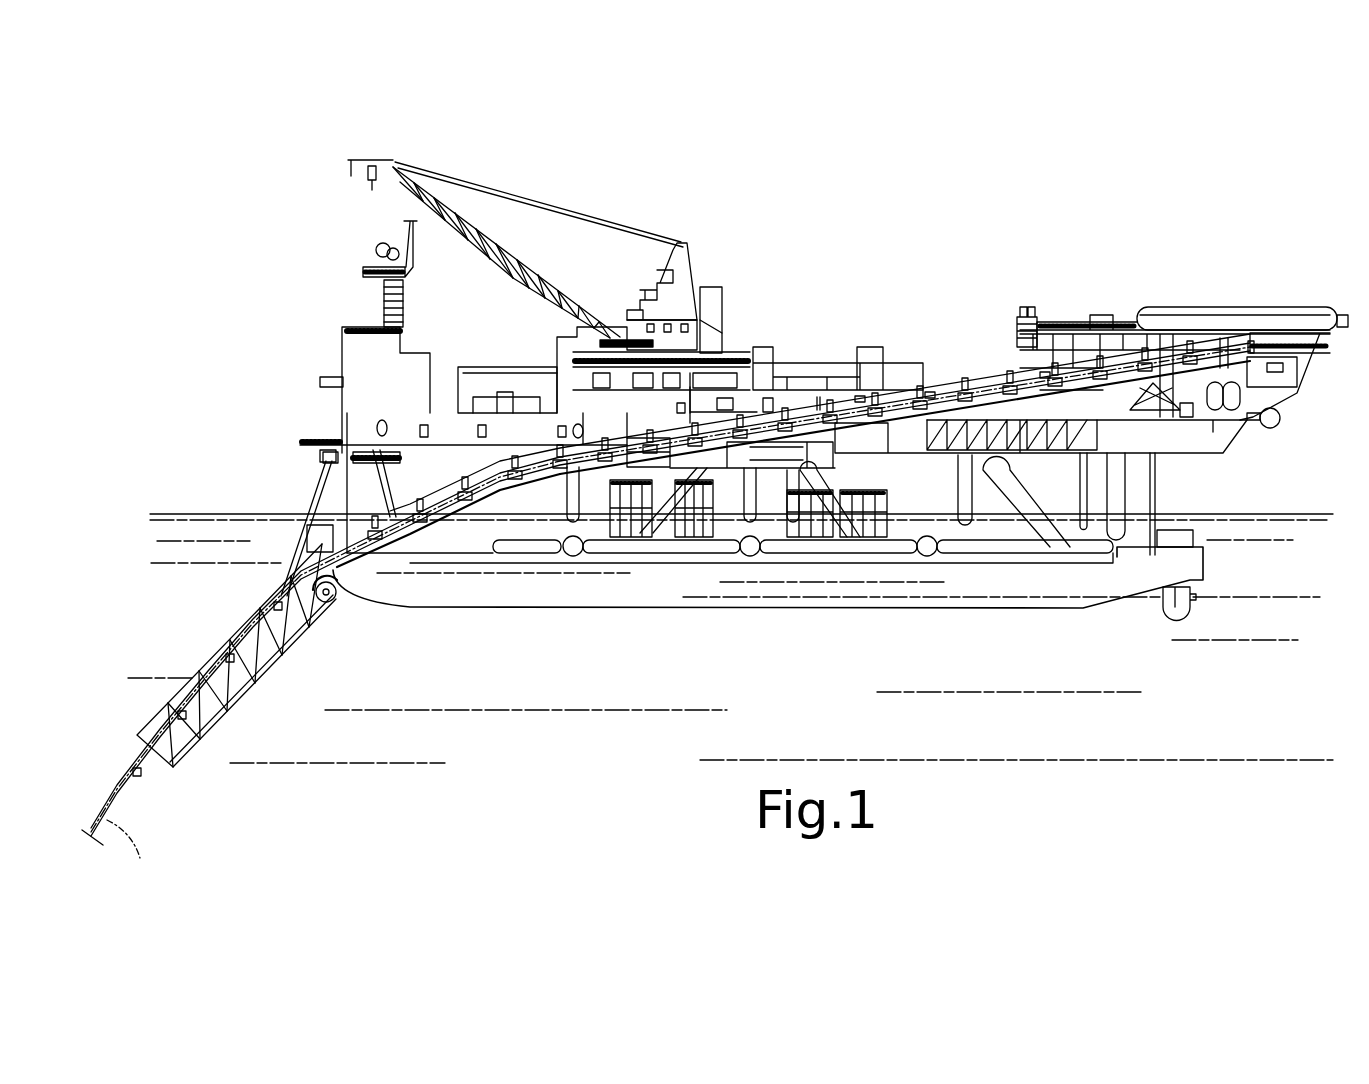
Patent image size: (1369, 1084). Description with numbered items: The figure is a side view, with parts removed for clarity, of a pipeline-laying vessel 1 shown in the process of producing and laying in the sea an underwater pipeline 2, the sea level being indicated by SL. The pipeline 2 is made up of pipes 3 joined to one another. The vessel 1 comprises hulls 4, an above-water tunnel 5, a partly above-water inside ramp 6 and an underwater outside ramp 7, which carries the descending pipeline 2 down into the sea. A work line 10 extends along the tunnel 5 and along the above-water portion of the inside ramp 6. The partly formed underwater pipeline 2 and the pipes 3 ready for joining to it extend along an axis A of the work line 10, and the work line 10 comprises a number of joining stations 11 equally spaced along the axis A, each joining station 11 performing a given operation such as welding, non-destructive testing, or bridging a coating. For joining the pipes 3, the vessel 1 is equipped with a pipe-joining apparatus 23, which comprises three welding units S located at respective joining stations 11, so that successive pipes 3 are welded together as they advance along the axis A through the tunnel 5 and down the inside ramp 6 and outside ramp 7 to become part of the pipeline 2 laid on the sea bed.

The pipeline-laying vessel 1 is at (1040, 208).
The underwater pipeline 2 is at (132, 810).
The pipes 3 is at (121, 772).
The hulls 4 is at (800, 592).
The above-water tunnel 5 is at (957, 375).
The inside ramp 6 is at (438, 545).
The outside ramp 7 is at (151, 697).
The work line 10 is at (888, 352).
The joining stations 11 is at (655, 465).
The pipe-joining apparatus 23 is at (615, 475).
The welding units S is at (860, 398).
The sea level SL is at (182, 509).
The axis of work line A is at (133, 847).